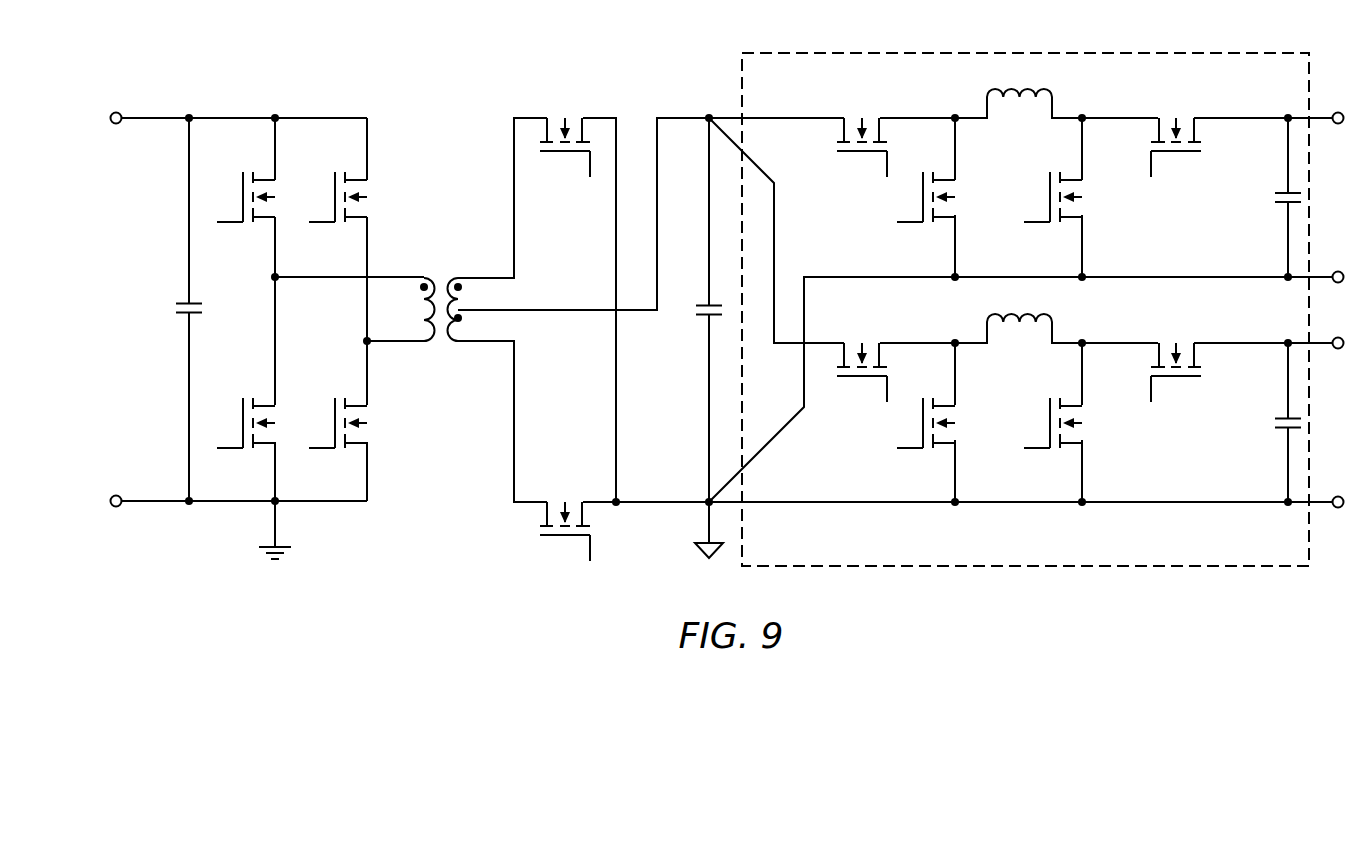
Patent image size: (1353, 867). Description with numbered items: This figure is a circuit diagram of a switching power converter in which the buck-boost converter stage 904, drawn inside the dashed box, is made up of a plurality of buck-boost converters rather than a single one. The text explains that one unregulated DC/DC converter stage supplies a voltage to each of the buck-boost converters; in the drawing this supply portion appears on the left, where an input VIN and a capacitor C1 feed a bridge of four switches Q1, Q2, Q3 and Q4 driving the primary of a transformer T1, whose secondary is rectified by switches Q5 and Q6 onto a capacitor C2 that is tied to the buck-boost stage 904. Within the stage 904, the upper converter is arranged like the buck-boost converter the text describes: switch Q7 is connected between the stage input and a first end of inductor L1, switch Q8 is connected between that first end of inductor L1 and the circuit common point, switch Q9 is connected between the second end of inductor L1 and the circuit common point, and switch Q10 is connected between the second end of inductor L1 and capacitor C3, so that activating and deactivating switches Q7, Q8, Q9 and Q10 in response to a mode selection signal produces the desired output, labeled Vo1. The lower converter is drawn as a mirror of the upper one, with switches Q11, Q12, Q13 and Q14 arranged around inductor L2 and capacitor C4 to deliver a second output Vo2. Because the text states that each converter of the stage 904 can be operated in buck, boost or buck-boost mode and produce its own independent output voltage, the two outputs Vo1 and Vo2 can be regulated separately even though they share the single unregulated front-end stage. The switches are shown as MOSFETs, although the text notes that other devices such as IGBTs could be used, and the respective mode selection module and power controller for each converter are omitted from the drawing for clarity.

The buck-boost converter stage 904 is at (1030, 288).
The primary bridge transistor Q1 is at (243, 197).
The primary bridge transistor Q2 is at (243, 423).
The primary bridge transistor Q3 is at (335, 197).
The primary bridge transistor Q4 is at (335, 423).
The secondary rectifier transistor Q5 is at (565, 531).
The secondary rectifier transistor Q6 is at (565, 148).
The switch Q7 is at (862, 148).
The switch Q8 is at (923, 197).
The switch Q9 is at (1050, 197).
The switch Q10 is at (1176, 148).
The buck switch transistor Q11 is at (862, 373).
The buck switch transistor Q12 is at (920, 423).
The buck switch transistor Q13 is at (1047, 423).
The buck switch transistor Q14 is at (1176, 373).
The input capacitor C1 is at (202, 309).
The intermediate capacitor C2 is at (695, 310).
The capacitor C3 is at (1274, 197).
The output capacitor C4 is at (1274, 422).
The inductor L1 is at (1018, 90).
The output inductor L2 is at (1018, 315).
The transformer T1 is at (441, 296).
The input voltage terminals VIN is at (133, 310).
The first output voltage terminals Vo1 is at (1336, 198).
The second output voltage terminals Vo2 is at (1336, 423).